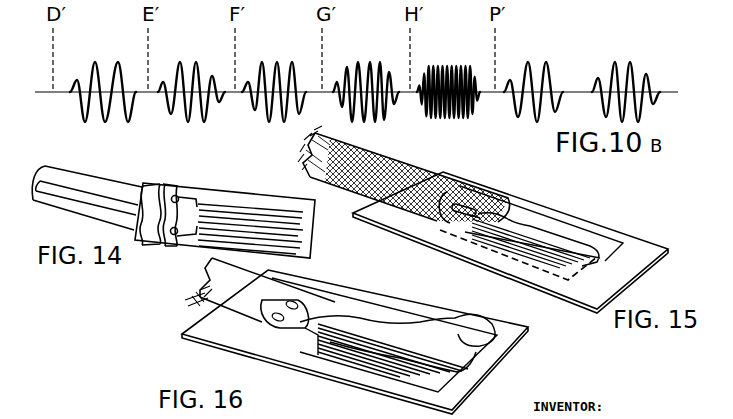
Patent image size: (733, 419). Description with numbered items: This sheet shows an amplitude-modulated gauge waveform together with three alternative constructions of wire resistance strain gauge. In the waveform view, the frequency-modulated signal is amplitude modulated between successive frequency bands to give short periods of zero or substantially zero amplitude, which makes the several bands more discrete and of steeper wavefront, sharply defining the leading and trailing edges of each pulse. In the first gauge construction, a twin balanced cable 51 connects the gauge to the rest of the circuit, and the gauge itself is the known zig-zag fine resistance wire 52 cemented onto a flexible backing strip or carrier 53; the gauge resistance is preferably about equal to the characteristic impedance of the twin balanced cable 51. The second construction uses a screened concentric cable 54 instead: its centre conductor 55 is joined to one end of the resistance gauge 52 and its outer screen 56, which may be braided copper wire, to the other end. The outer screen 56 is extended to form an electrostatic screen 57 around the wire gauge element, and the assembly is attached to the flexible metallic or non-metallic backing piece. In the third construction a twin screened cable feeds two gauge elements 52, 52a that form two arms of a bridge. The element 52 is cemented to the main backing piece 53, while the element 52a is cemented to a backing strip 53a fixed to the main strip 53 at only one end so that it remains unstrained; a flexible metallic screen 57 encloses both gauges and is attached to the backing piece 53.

In FIG. 14, the twin balanced cable 51 is at (118, 194).
In FIG. 14, the resistance gauge wire 52 is at (228, 177).
In FIG. 15, the resistance gauge wire 52 is at (523, 258).
In FIG. 16, the resistance gauge wire 52 is at (298, 348).
In FIG. 16, the second gauge element 52a is at (365, 337).
In FIG. 15, the flexible backing strip 53 is at (641, 272).
In FIG. 16, the flexible backing strip 53 is at (241, 345).
In FIG. 16, the backing strip for second element 53a is at (365, 337).
In FIG. 15, the screened concentric cable 54 is at (305, 167).
In FIG. 16, the screened concentric cable 54 is at (190, 299).
In FIG. 15, the centre conductor 55 is at (464, 197).
In FIG. 15, the outer screen 56 is at (395, 163).
In FIG. 16, the outer screen 56 is at (222, 314).
In FIG. 15, the electrostatic screen 57 is at (546, 222).
In FIG. 16, the electrostatic screen 57 is at (424, 323).